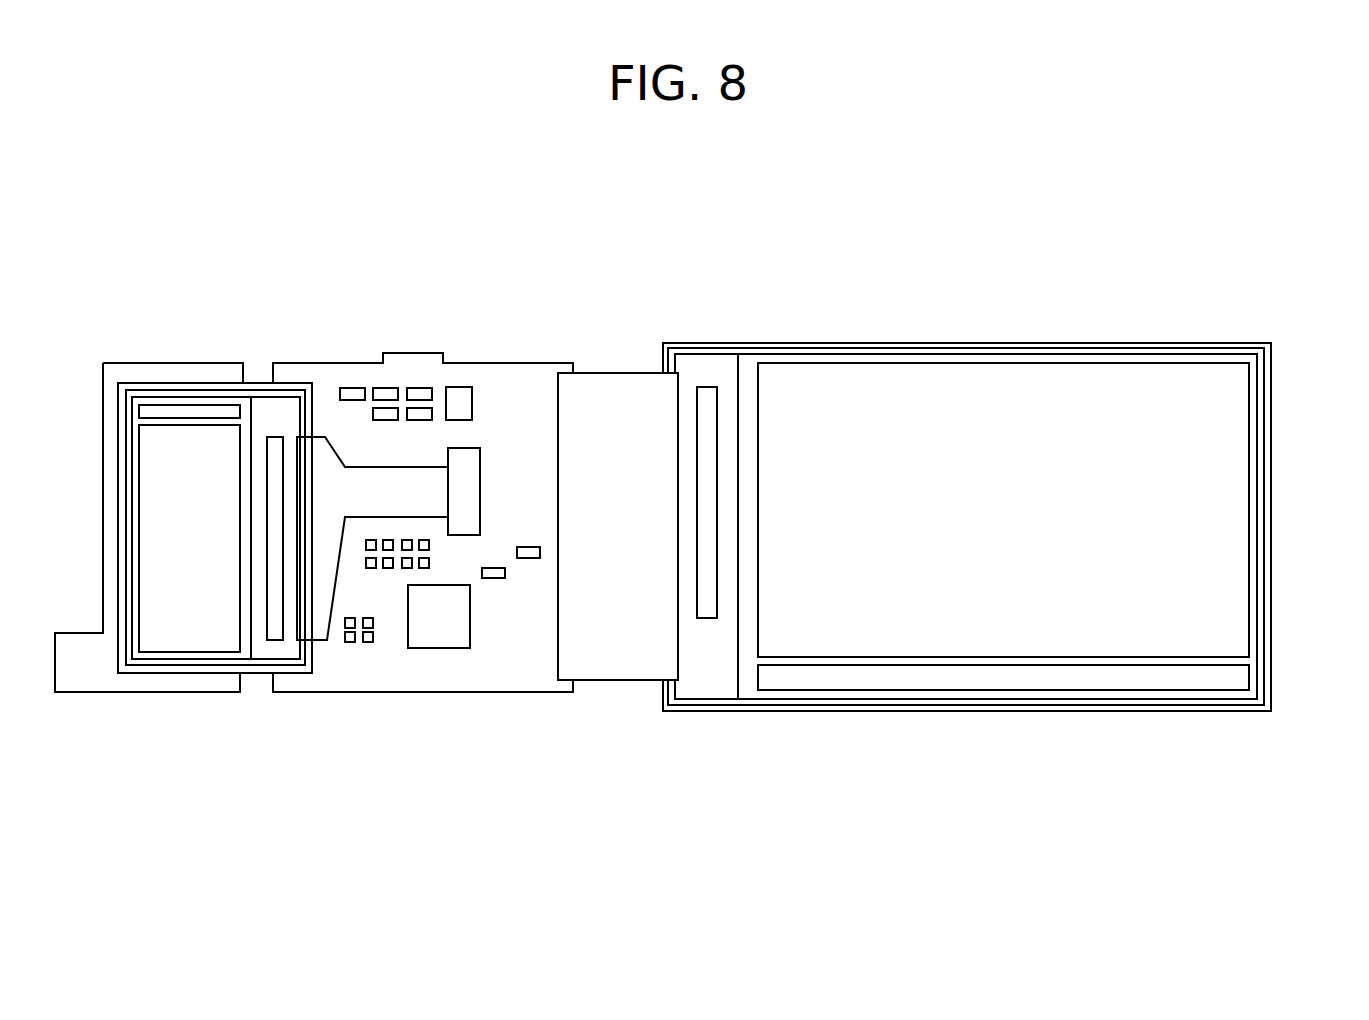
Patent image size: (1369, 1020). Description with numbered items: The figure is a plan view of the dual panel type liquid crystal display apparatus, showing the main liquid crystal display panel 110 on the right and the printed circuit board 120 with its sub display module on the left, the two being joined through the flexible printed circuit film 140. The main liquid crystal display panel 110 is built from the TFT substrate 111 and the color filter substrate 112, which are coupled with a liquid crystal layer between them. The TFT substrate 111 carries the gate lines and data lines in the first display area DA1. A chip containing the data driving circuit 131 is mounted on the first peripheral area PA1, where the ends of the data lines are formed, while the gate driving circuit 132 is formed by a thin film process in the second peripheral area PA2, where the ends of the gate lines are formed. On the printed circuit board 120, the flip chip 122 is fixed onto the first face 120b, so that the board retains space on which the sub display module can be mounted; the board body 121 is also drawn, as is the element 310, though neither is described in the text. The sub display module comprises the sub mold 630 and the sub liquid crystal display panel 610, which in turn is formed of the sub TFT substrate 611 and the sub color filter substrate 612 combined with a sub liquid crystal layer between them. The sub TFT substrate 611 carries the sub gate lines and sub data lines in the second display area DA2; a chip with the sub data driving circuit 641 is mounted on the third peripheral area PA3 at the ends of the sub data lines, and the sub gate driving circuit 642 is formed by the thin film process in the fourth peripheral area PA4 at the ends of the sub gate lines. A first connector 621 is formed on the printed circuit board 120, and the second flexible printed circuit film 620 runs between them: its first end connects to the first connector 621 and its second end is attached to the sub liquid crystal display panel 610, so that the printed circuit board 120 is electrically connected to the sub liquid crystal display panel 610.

The liquid crystal display panel 110 is at (973, 494).
The TFT substrate 111 is at (712, 363).
The color filter substrate 112 is at (753, 363).
The printed circuit board 120 is at (314, 581).
The first face of the printed circuit board 120b is at (538, 668).
The circuit board body 121 is at (395, 693).
The flip chip 122 is at (440, 640).
The data driving circuit 131 is at (695, 445).
The gate driving circuit 132 is at (1013, 692).
The flexible printed circuit film 140 is at (618, 382).
The window 310 is at (1271, 373).
The sub liquid crystal display panel 610 is at (182, 543).
The sub TFT substrate 611 is at (264, 658).
The sub color filter substrate 612 is at (220, 655).
The second flexible printed circuit film 620 is at (426, 474).
The first connector 621 is at (472, 485).
The sub mold 630 is at (298, 383).
The sub data driving circuit 641 is at (278, 446).
The sub gate driving circuit 642 is at (181, 414).
The first display area DA1 is at (1187, 505).
The second display area DA2 is at (172, 528).
The first peripheral area PA1 is at (716, 634).
The second peripheral area PA2 is at (1254, 680).
The third peripheral area PA3 is at (297, 654).
The fourth peripheral area PA4 is at (142, 392).